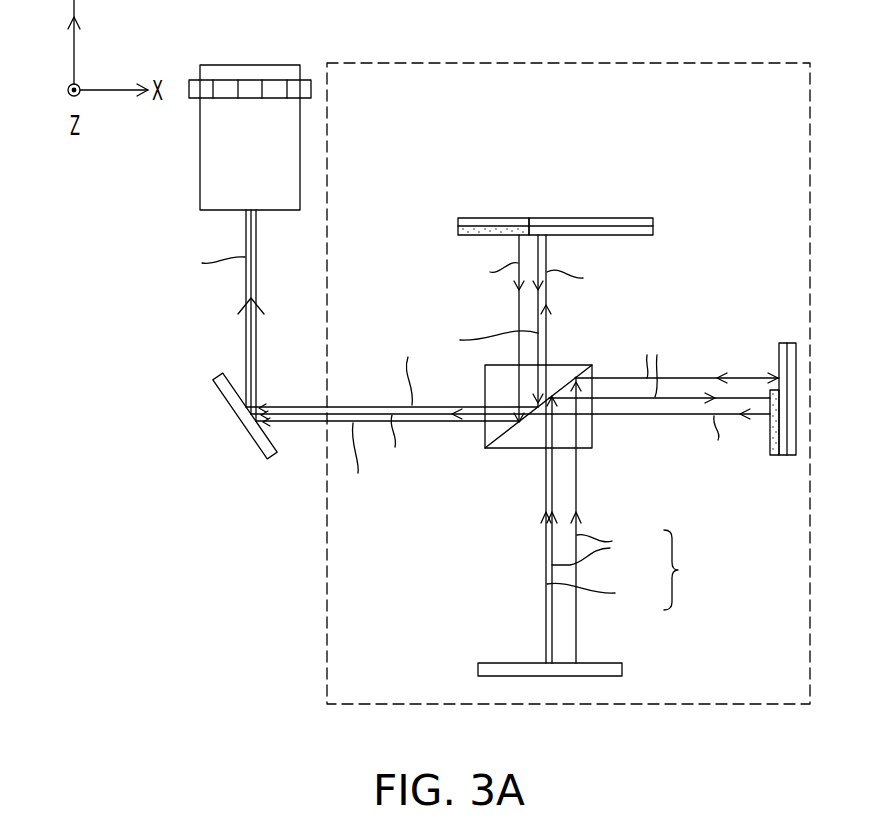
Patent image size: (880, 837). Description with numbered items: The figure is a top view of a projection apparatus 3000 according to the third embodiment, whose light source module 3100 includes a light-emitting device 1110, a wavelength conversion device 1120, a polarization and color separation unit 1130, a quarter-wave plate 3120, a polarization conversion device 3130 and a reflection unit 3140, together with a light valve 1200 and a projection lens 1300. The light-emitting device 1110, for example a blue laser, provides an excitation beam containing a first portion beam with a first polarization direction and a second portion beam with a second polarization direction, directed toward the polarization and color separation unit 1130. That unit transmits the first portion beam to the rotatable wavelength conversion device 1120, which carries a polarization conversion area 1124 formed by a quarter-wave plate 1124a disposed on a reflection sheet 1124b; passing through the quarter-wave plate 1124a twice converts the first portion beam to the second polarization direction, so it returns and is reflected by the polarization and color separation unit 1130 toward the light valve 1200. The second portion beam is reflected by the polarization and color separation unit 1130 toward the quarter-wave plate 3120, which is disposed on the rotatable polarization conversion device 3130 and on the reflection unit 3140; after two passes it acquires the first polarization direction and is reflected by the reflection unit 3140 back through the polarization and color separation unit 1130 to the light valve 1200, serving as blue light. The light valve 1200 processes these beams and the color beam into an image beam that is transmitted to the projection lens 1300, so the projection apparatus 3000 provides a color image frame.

The projection apparatus 3000 is at (180, 697).
The light source module 3100 is at (725, 63).
The projection lens 1300 is at (205, 196).
The light valve 1200 is at (227, 392).
The wavelength conversion device 1120 is at (523, 172).
The polarization conversion area 1124 is at (444, 172).
The quarter-wave plate 1124a is at (458, 230).
The reflection sheet 1124b is at (472, 222).
The polarization and color separation unit 1130 is at (583, 436).
The light-emitting device 1110 is at (620, 670).
The polarization conversion device 3130 is at (771, 341).
The reflection unit 3140 is at (779, 347).
The quarter-wave plate 3120 is at (775, 458).